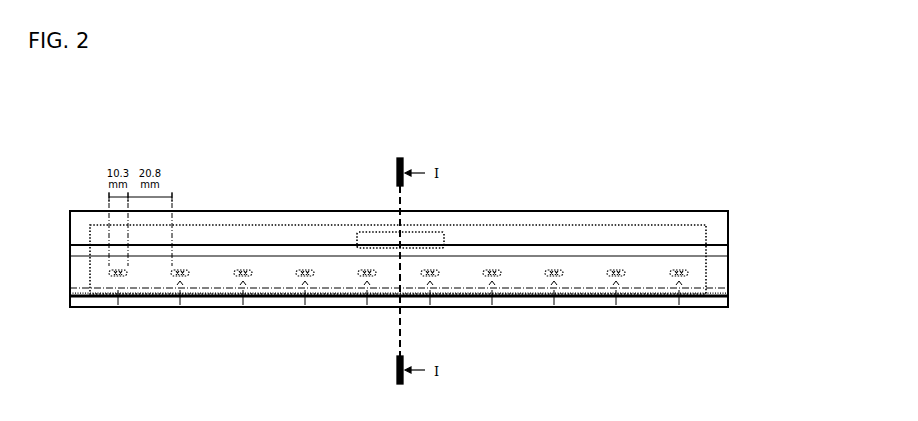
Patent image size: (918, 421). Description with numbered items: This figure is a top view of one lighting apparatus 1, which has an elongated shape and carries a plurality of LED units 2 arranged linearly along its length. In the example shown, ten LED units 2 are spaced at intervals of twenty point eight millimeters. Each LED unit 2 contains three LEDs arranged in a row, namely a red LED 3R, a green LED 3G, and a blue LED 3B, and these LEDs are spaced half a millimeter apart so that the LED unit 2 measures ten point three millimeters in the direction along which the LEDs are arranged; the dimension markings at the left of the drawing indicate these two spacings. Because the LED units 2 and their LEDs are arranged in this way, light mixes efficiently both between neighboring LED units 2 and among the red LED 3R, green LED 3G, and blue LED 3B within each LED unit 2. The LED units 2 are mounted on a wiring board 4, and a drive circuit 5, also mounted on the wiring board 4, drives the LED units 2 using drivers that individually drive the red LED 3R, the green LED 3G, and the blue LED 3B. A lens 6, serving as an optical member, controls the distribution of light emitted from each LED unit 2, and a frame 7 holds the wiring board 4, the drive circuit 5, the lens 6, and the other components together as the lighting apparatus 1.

The lighting apparatus 1 is at (266, 167).
The LED unit 2 is at (679, 330).
The red LED 3R is at (108, 277).
The green LED 3G is at (117, 279).
The blue LED 3B is at (124, 279).
The wiring board 4 is at (528, 230).
The drive circuit 5 is at (360, 229).
The lens 6 is at (720, 273).
The frame 7 is at (720, 228).